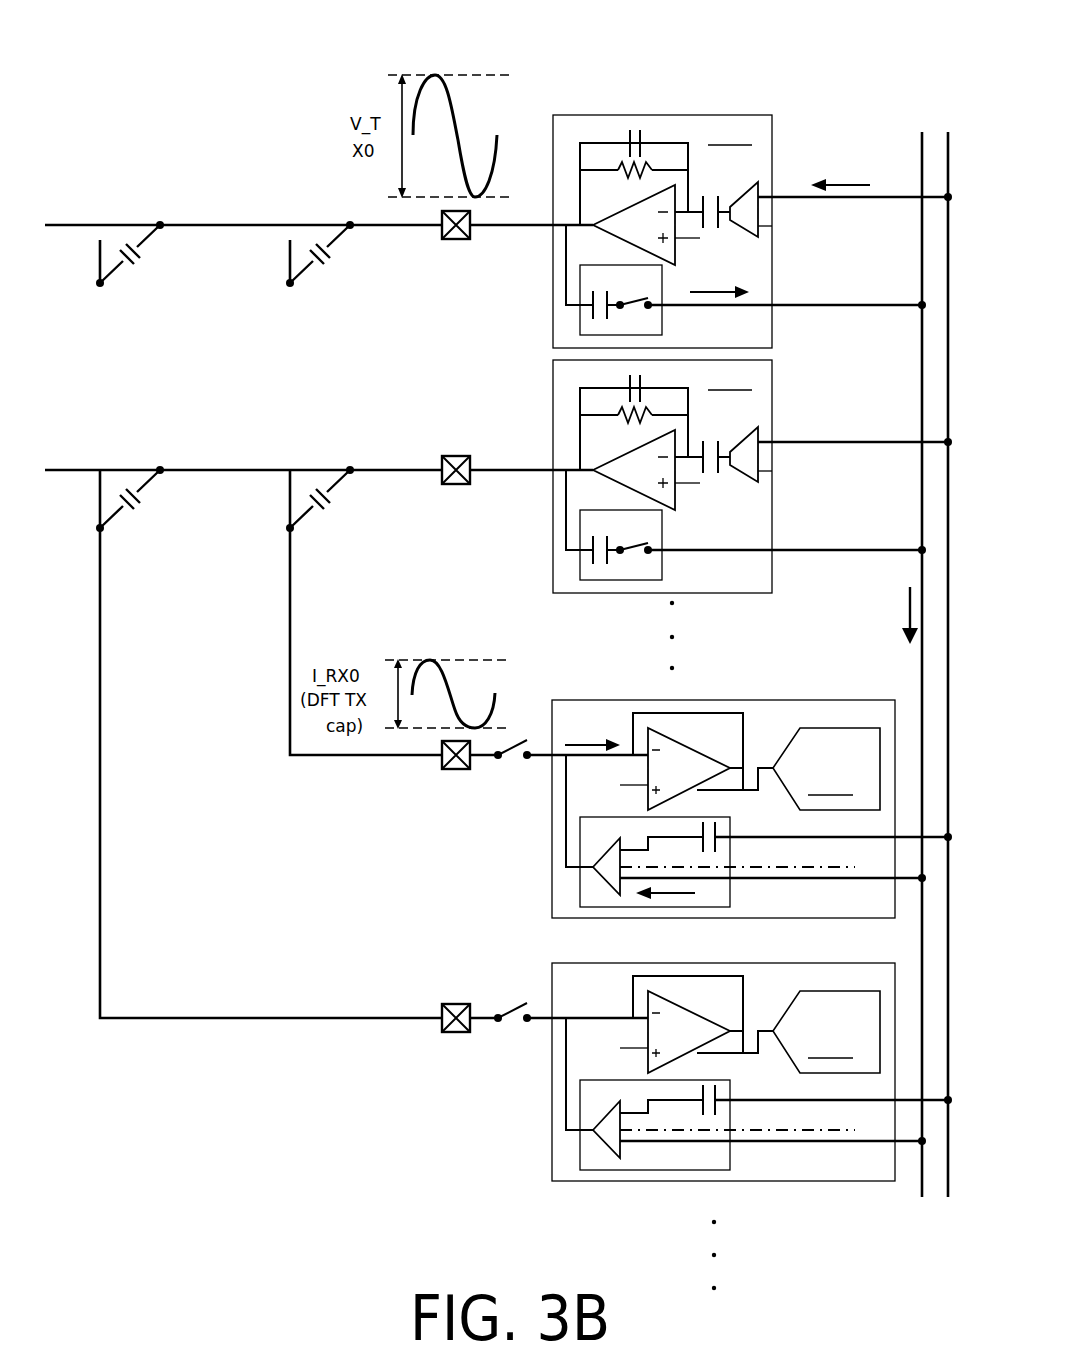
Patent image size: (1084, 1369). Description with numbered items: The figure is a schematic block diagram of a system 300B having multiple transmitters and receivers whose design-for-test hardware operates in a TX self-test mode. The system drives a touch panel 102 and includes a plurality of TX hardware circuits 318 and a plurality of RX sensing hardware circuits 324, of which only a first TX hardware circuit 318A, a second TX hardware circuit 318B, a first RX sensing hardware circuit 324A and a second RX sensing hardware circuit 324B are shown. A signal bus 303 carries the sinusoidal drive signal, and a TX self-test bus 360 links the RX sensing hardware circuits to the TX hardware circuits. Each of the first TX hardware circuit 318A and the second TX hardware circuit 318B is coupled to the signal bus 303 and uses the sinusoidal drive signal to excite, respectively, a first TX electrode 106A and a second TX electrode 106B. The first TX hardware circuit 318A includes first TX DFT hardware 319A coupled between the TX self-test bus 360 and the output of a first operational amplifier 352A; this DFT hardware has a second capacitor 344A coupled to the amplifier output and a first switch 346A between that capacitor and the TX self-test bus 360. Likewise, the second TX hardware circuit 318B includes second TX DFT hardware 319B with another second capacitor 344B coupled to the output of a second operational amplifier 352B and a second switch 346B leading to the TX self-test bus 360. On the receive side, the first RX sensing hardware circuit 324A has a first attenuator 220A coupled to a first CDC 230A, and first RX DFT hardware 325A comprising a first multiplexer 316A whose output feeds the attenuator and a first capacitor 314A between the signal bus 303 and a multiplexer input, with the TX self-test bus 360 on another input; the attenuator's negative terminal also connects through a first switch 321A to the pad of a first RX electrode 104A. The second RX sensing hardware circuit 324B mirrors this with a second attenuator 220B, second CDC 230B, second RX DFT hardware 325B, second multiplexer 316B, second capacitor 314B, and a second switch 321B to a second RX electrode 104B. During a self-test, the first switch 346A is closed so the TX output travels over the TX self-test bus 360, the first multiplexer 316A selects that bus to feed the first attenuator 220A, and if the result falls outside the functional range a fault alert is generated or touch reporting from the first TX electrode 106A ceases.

The system 300B is at (135, 13).
The touch panel 102 is at (180, 190).
The first TX electrode 106A is at (240, 225).
The second TX electrode 106B is at (240, 470).
The first RX electrode 104A is at (290, 622).
The second RX electrode 104B is at (262, 1018).
The TX hardware circuits 318 is at (452, 370).
The first TX hardware circuit 318A is at (681, 228).
The second TX hardware circuit 318B is at (675, 488).
The first operational amplifier 352A is at (636, 205).
The second operational amplifier 352B is at (636, 450).
The second capacitor 344A is at (593, 298).
The second capacitor 344B is at (593, 540).
The first TX DFT hardware 319A is at (668, 300).
The second TX DFT hardware 319B is at (662, 543).
The first switch 346A is at (648, 305).
The second switch 346B is at (648, 550).
The RX sensing hardware circuits 324 is at (875, 682).
The first RX sensing hardware circuit 324A is at (691, 796).
The second RX sensing hardware circuit 324B is at (691, 1077).
The first switch 321A is at (527, 740).
The second switch 321B is at (527, 1003).
The first attenuator 220A is at (683, 745).
The second attenuator 220B is at (728, 1012).
The first CDC 230A is at (826, 769).
The second CDC 230B is at (826, 1032).
The first RX DFT hardware 325A is at (691, 857).
The second RX DFT hardware 325B is at (691, 1119).
The first multiplexer 316A is at (620, 893).
The second multiplexer 316B is at (620, 1155).
The first capacitor 314A is at (715, 855).
The second capacitor 314B is at (715, 1118).
The TX self-test bus 360 is at (921, 1197).
The signal bus 303 is at (948, 1197).